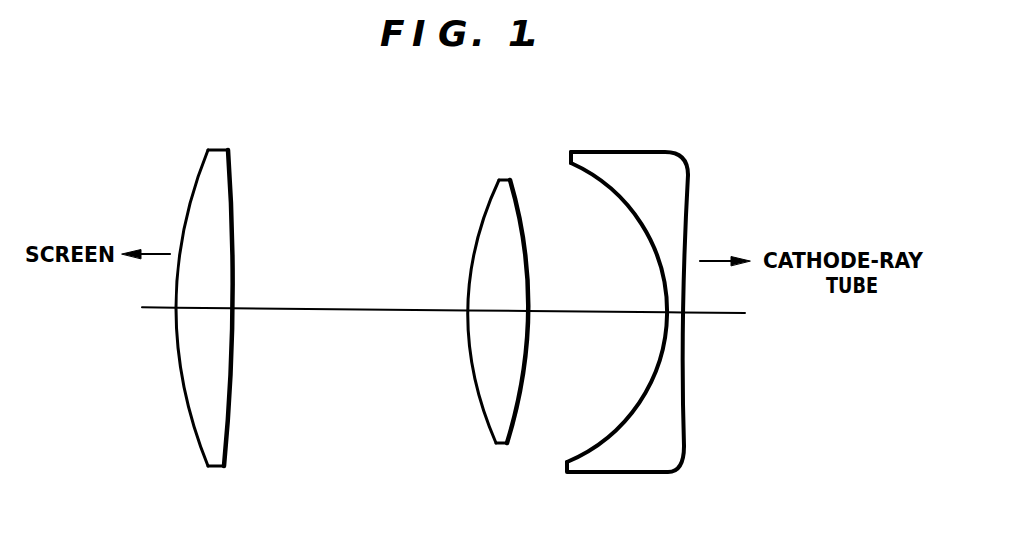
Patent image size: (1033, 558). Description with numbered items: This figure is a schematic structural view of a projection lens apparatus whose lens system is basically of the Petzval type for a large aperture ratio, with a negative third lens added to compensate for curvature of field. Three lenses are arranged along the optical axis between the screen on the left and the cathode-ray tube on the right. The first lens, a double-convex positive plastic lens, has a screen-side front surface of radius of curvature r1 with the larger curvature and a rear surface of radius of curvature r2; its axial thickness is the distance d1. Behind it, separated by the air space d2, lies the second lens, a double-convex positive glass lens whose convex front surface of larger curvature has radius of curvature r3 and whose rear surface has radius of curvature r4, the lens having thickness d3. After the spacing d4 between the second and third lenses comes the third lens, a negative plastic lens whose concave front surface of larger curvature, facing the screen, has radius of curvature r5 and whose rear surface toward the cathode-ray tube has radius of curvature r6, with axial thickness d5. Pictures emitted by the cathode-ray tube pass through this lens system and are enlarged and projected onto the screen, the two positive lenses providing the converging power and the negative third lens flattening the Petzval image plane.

The radius of curvature of the front surface of the first lens r1 is at (204, 162).
The radius of curvature of the rear surface of the first lens r2 is at (230, 170).
The radius of curvature of the front surface of the second lens r3 is at (492, 197).
The radius of curvature of the rear surface of the second lens r4 is at (514, 192).
The radius of curvature of the front surface of the third lens r5 is at (592, 173).
The radius of curvature of the rear surface of the third lens r6 is at (690, 176).
The thickness of the first lens d1 is at (204, 325).
The distance between the first and second lenses d2 is at (350, 325).
The thickness of the second lens d3 is at (498, 327).
The distance between the second and third lenses d4 is at (598, 327).
The thickness of the third lens d5 is at (671, 326).